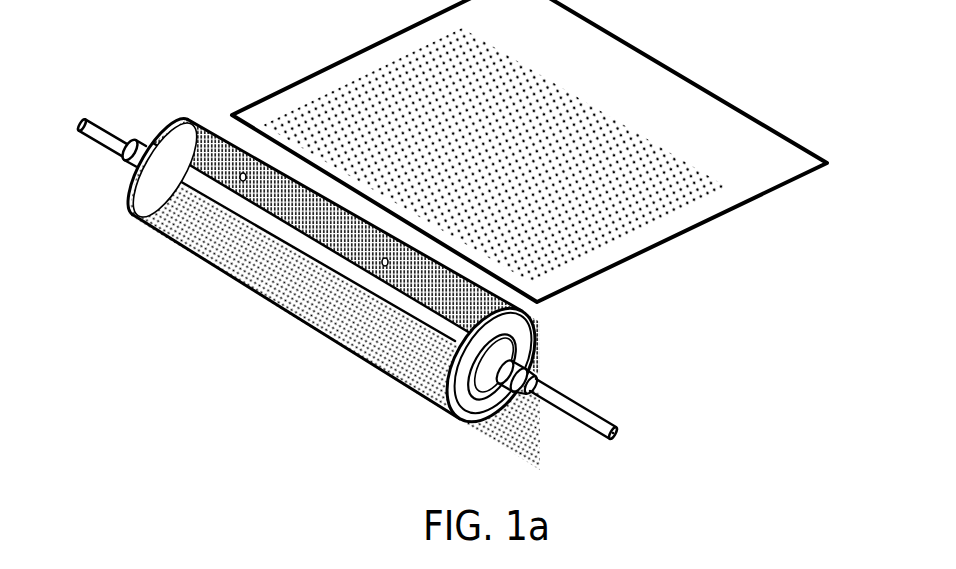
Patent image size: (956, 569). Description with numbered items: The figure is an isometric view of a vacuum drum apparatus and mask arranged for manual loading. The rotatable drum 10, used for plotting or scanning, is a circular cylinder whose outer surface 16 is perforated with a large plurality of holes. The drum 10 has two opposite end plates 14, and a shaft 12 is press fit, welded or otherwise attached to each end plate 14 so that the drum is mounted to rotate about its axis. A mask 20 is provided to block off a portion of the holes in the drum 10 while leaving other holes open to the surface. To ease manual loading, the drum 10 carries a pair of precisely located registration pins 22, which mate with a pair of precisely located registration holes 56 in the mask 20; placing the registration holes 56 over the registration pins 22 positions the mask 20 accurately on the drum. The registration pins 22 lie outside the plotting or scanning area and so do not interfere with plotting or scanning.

The rotatable drum 10 is at (132, 214).
The shaft 12 is at (146, 140).
The end plate 14 is at (473, 404).
The outer surface 16 is at (402, 382).
The mask 20 is at (646, 245).
The registration pin 22 is at (238, 168).
The registration hole 56 is at (313, 145).